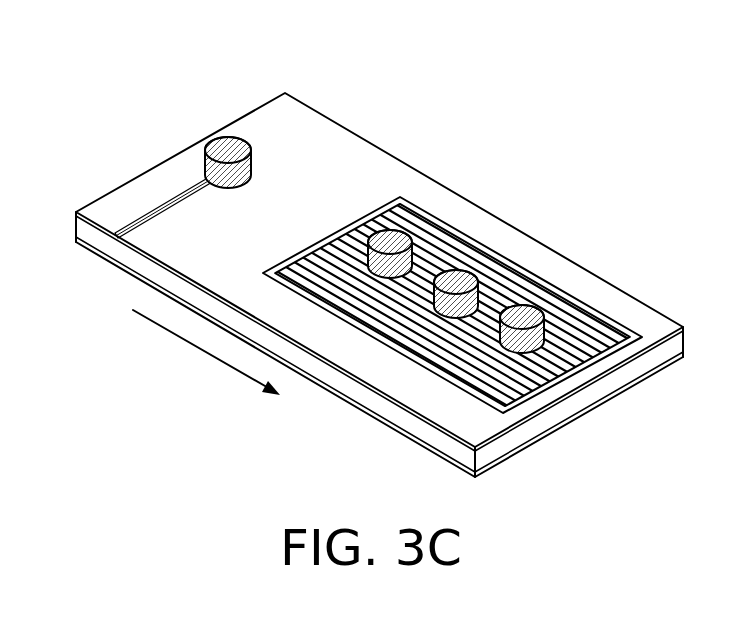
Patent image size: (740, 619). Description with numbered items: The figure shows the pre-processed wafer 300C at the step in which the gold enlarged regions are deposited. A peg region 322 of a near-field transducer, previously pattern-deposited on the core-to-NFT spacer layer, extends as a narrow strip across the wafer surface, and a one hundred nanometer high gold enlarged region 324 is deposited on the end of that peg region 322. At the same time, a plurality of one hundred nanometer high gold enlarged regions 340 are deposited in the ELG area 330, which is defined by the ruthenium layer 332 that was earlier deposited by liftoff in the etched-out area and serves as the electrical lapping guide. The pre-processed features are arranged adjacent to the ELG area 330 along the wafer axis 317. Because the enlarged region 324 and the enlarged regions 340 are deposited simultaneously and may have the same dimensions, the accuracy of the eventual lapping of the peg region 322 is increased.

The pre-processed wafer 300C is at (133, 75).
The wafer axis 317 is at (185, 343).
The peg region 322 is at (140, 216).
The enlarged region 324 is at (224, 137).
The ELG area 330 is at (582, 300).
The ruthenium layer 332 is at (603, 312).
The enlarged regions 340 is at (390, 242).